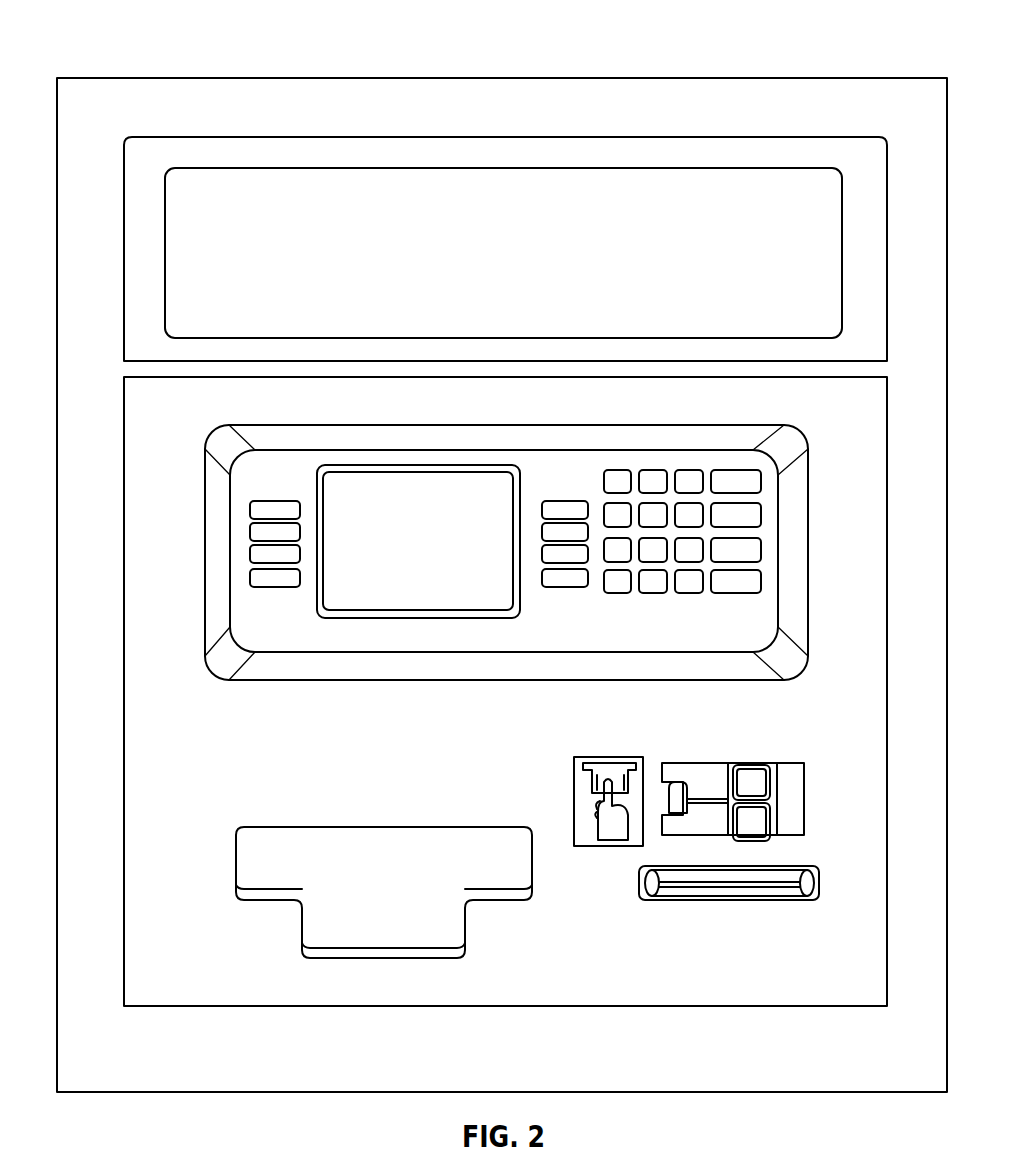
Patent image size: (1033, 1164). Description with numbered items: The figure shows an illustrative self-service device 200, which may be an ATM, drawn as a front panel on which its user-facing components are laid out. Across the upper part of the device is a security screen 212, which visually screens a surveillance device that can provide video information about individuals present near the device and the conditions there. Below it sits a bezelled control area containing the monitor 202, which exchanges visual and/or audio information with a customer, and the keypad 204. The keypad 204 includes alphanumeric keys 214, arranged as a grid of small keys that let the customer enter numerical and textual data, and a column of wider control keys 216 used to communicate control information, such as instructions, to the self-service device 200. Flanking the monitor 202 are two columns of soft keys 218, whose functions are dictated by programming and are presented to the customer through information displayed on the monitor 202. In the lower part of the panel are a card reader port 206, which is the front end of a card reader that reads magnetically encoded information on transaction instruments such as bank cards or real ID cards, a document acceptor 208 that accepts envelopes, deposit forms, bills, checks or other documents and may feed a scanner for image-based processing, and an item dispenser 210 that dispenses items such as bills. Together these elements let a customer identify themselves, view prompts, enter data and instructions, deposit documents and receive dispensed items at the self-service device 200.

The self-service device 200 is at (114, 37).
The monitor 202 is at (450, 470).
The keypad 204 is at (557, 632).
The card reader port 206 is at (787, 763).
The document acceptor 208 is at (800, 866).
The item dispenser 210 is at (263, 826).
The security screen 212 is at (755, 168).
The alphanumeric keys 214 is at (620, 597).
The control keys 216 is at (742, 465).
The soft keys 218 is at (280, 487).